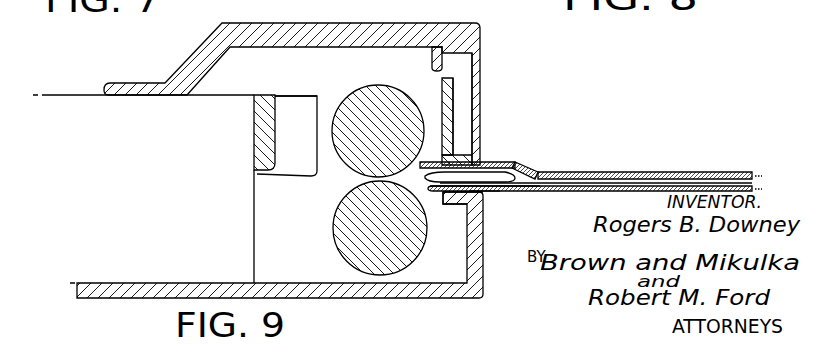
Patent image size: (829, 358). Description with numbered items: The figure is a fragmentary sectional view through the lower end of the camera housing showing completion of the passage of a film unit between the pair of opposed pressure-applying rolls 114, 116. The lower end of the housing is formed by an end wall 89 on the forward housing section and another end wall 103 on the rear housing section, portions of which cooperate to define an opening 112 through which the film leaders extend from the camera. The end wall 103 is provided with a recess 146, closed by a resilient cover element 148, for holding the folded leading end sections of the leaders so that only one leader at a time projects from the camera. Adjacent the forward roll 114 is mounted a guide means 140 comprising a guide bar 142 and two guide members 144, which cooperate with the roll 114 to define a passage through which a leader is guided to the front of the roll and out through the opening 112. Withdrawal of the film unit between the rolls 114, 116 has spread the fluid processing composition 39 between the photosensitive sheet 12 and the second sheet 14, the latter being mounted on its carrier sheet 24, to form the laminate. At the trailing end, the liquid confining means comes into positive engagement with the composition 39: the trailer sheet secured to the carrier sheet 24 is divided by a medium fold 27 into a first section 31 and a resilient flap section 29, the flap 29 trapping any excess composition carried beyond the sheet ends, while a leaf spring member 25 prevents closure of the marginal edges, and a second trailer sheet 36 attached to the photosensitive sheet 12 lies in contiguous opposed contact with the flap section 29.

The photosensitive sheet 12 is at (554, 173).
The second sheet 14 is at (607, 191).
The carrier sheet 24 is at (540, 191).
The leaf spring member 25 is at (487, 193).
The medium fold 27 is at (420, 185).
The second resilient flap section 29 is at (418, 158).
The first section 31 is at (508, 190).
The second trailer sheet 36 is at (490, 168).
The fluid processing composition 39 is at (608, 178).
The end wall 89 is at (469, 27).
The end wall 103 is at (446, 137).
The opening 112 is at (436, 63).
The pressure-applying roll 114 is at (374, 97).
The pressure-applying roll 116 is at (357, 246).
The guide means 140 is at (280, 95).
The guide bar 142 is at (262, 115).
The guide members 144 is at (301, 103).
The recess 146 is at (458, 108).
The resilient cover element 148 is at (468, 80).